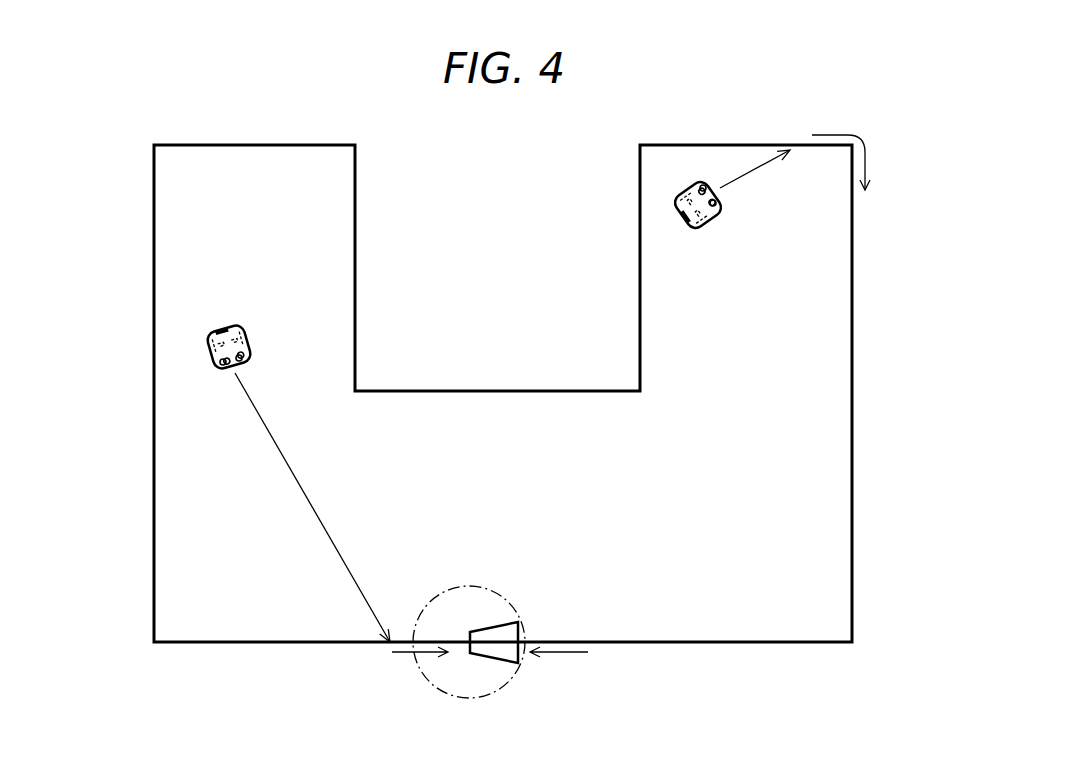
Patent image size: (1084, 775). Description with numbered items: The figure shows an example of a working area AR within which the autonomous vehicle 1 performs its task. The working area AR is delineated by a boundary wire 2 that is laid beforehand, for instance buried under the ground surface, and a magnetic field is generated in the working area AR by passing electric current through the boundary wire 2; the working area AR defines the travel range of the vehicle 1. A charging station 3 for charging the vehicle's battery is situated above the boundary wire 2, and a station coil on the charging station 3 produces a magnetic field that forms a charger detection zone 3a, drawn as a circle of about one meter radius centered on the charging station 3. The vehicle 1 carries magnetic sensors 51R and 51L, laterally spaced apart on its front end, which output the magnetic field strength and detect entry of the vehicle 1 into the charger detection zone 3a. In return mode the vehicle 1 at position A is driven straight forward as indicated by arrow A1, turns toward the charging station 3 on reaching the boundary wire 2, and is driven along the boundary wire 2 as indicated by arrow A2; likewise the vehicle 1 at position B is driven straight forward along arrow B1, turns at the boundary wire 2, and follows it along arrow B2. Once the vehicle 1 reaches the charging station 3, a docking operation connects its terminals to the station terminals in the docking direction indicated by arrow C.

The vehicle 1 is at (205, 337).
The boundary wire 2 is at (852, 473).
The charging station 3 is at (498, 658).
The charger detection zone 3a is at (457, 697).
The left magnetic sensor 51L is at (248, 358).
The right magnetic sensor 51R is at (212, 363).
The position A is at (203, 329).
The position B is at (690, 172).
The arrow A1 is at (312, 507).
The arrow A2 is at (414, 664).
The arrow B1 is at (756, 170).
The arrow B2 is at (854, 155).
The arrow C is at (559, 664).
The working area AR is at (813, 293).